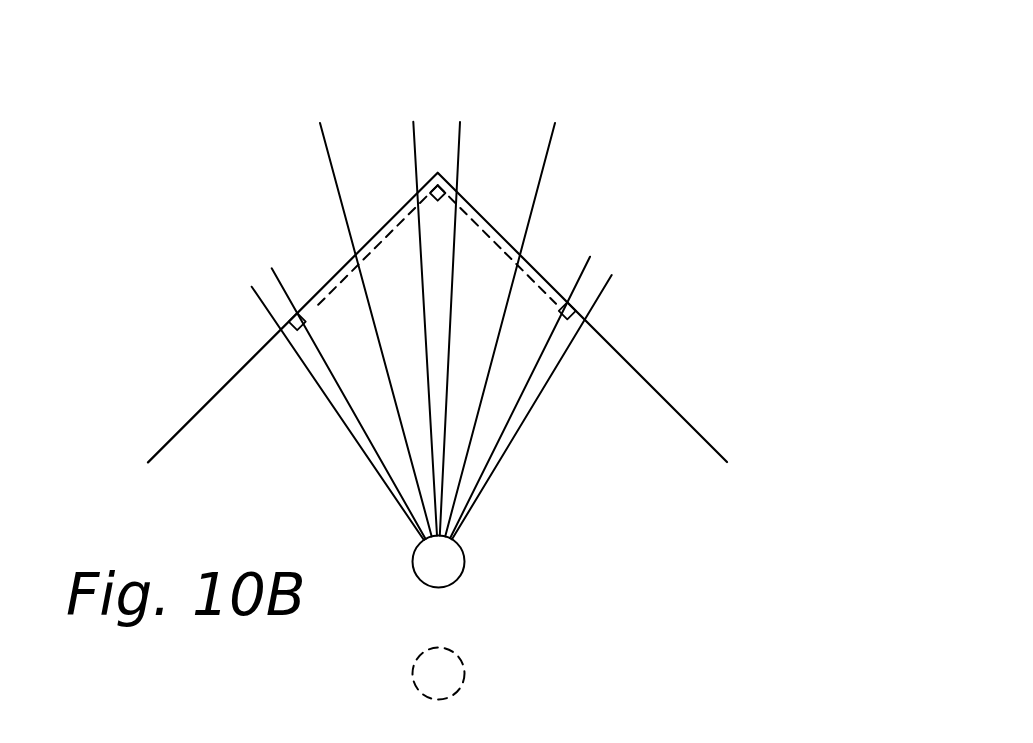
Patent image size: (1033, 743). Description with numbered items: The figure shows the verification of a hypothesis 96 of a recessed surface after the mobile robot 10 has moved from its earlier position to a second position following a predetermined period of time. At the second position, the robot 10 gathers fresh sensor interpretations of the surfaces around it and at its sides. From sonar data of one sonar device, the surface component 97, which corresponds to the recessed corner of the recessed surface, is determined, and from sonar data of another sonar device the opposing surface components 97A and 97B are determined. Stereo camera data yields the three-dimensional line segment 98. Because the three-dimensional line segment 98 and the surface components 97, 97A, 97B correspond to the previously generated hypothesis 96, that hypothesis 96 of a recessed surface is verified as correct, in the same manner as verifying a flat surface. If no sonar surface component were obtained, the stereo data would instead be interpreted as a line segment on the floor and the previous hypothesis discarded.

The mobile robot 10 is at (622, 592).
The surface component 97 is at (437, 157).
The opposing surface component 97A is at (578, 340).
The opposing surface component 97B is at (303, 338).
The three-dimensional line segment 98 is at (400, 244).
The hypothesis 96 is at (540, 292).